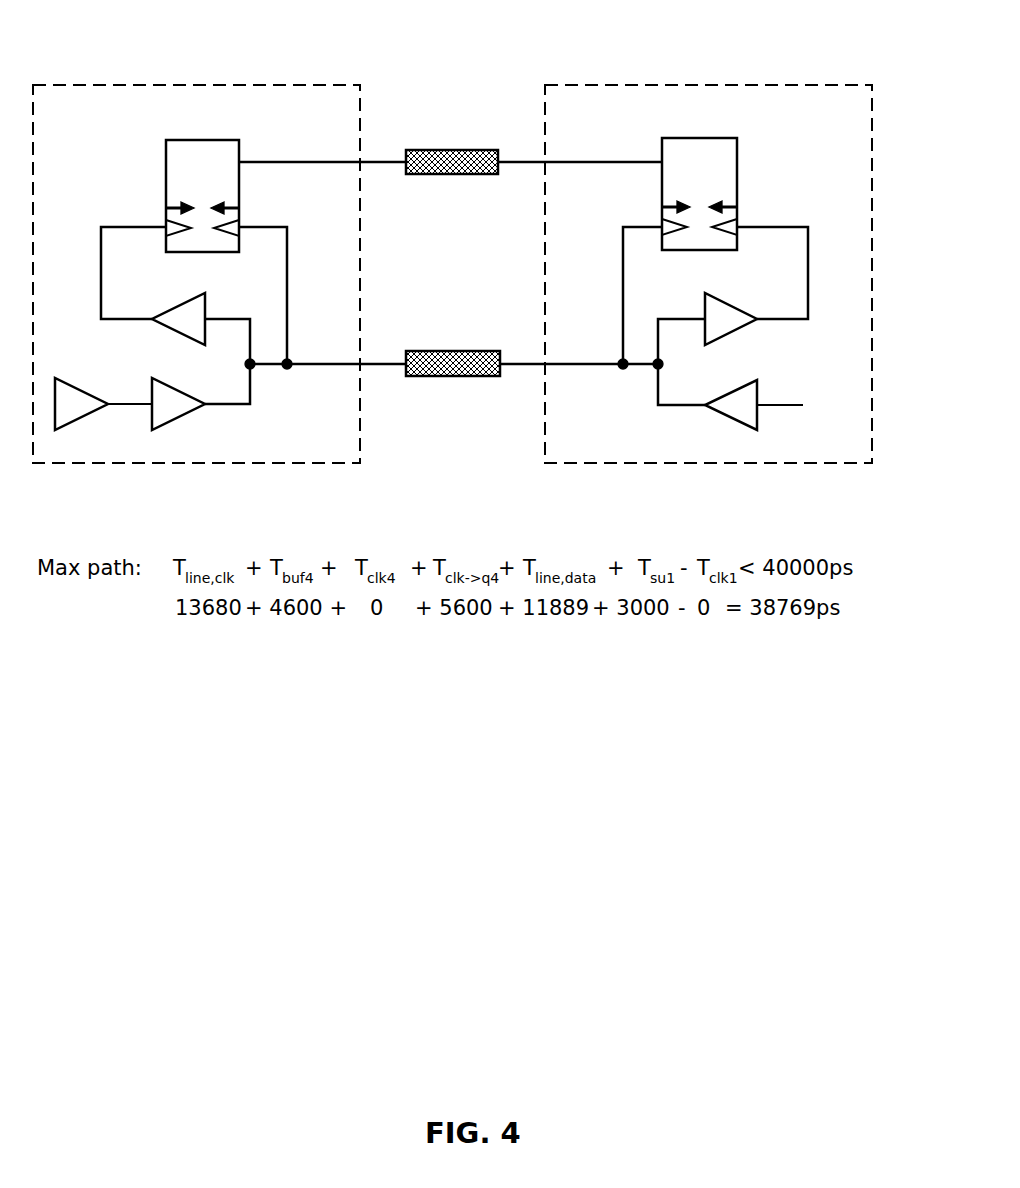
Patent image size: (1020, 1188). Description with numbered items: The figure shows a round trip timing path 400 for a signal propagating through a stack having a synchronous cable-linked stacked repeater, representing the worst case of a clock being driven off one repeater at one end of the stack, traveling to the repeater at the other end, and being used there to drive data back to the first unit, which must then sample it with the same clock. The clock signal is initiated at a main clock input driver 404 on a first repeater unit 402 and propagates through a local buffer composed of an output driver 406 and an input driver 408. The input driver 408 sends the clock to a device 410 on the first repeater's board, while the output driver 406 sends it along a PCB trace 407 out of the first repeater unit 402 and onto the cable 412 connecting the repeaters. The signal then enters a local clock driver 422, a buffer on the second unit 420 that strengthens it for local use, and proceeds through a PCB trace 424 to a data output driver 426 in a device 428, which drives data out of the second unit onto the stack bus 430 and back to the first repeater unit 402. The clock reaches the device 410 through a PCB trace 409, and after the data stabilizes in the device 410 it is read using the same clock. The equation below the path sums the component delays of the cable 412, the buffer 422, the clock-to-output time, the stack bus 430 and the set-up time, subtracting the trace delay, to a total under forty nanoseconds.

The round trip timing path 400 is at (790, 66).
The first repeater unit 402 is at (342, 154).
The main clock input driver 404 is at (68, 385).
The output driver 406 is at (190, 415).
The PCB trace 407 is at (250, 385).
The input driver 408 is at (206, 311).
The PCB trace 409 is at (101, 258).
The device 410 is at (166, 157).
The cable 412 is at (456, 377).
The second unit 420 is at (848, 155).
The local clock driver 422 is at (703, 307).
The PCB trace 424 is at (808, 268).
The data output driver 426 is at (739, 219).
The device 428 is at (701, 182).
The stack bus 430 is at (456, 176).